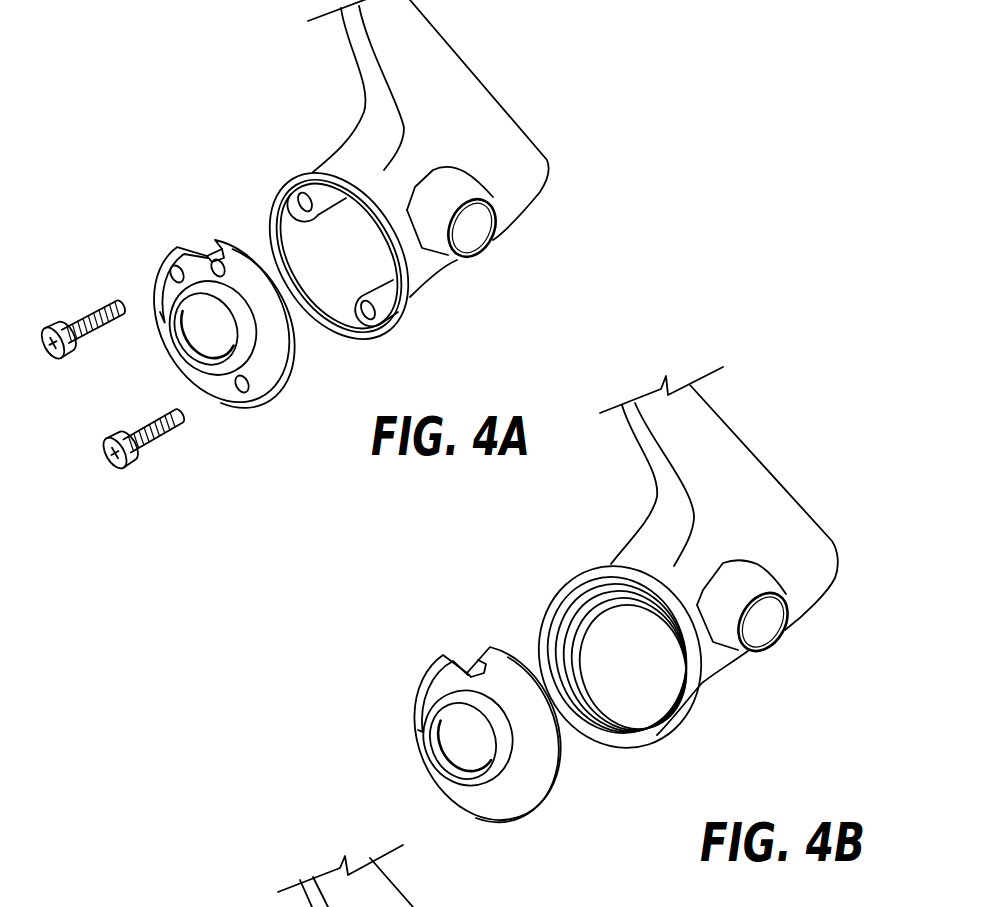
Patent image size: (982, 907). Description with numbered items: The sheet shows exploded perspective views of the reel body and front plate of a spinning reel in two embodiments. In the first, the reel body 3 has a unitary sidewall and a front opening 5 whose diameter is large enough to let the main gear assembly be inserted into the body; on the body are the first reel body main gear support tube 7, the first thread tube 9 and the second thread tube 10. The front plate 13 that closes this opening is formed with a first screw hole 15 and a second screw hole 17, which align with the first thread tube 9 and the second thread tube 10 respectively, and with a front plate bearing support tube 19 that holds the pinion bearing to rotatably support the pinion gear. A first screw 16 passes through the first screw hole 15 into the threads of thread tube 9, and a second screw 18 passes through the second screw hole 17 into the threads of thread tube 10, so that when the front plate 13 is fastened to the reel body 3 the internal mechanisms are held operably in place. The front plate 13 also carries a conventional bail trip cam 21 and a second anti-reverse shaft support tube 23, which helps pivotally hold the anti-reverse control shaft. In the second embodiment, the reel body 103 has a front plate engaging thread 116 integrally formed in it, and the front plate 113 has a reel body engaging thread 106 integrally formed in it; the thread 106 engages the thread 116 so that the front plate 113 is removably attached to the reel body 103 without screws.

In FIG. 4A, the reel body 3 is at (497, 70).
In FIG. 4A, the opening 5 is at (335, 317).
In FIG. 4A, the first reel body main gear support tube 7 is at (462, 188).
In FIG. 4A, the first thread tube 9 is at (370, 325).
In FIG. 4A, the second thread tube 10 is at (297, 197).
In FIG. 4A, the front plate 13 is at (215, 309).
In FIG. 4A, the first screw hole 15 is at (242, 392).
In FIG. 4A, the first screw 16 is at (119, 473).
In FIG. 4A, the second screw hole 17 is at (176, 266).
In FIG. 4A, the second screw 18 is at (80, 328).
In FIG. 4A, the front plate bearing support tube 19 is at (200, 353).
In FIG. 4A, the bail trip cam 21 is at (203, 241).
In FIG. 4A, the second anti-reverse shaft support tube 23 is at (221, 267).
In FIG. 4B, the reel body 103 is at (791, 474).
In FIG. 4B, the reel body engaging thread 106 is at (552, 805).
In FIG. 4B, the front plate 113 is at (529, 759).
In FIG. 4B, the front plate engaging thread 116 is at (560, 610).